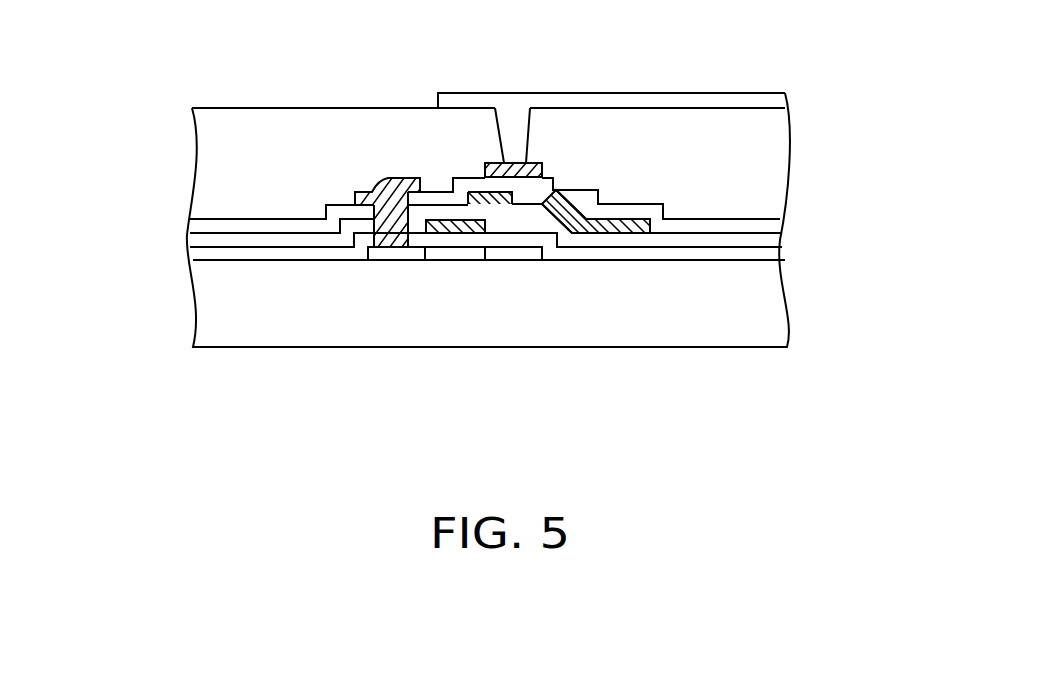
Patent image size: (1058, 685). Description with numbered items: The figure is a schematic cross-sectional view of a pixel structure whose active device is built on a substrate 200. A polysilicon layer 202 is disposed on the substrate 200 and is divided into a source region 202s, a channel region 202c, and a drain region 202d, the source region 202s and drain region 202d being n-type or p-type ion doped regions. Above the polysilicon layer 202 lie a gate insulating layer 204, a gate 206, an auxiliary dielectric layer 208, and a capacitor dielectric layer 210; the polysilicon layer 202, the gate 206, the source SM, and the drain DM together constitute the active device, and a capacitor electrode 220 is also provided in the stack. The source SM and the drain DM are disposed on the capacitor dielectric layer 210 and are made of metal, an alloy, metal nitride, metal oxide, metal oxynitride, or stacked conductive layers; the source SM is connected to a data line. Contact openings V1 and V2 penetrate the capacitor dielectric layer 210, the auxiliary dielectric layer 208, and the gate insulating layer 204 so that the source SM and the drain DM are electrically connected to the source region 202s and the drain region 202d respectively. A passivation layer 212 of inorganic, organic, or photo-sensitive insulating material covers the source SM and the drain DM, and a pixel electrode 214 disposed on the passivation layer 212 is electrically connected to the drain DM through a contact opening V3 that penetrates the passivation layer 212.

The substrate 200 is at (777, 317).
The polysilicon layer 202 is at (368, 255).
The source region 202s is at (392, 261).
The channel region 202c is at (460, 261).
The drain region 202d is at (522, 261).
The gate insulating layer 204 is at (775, 253).
The gate 206 is at (433, 233).
The auxiliary dielectric layer 208 is at (775, 242).
The capacitor dielectric layer 210 is at (773, 227).
The passivation layer 212 is at (778, 171).
The pixel electrode 214 is at (780, 101).
The capacitor electrode 220 is at (608, 227).
The source SM is at (397, 190).
The drain DM is at (508, 247).
The contact opening V1 is at (373, 222).
The contact opening V2 is at (560, 198).
The contact opening V3 is at (528, 127).